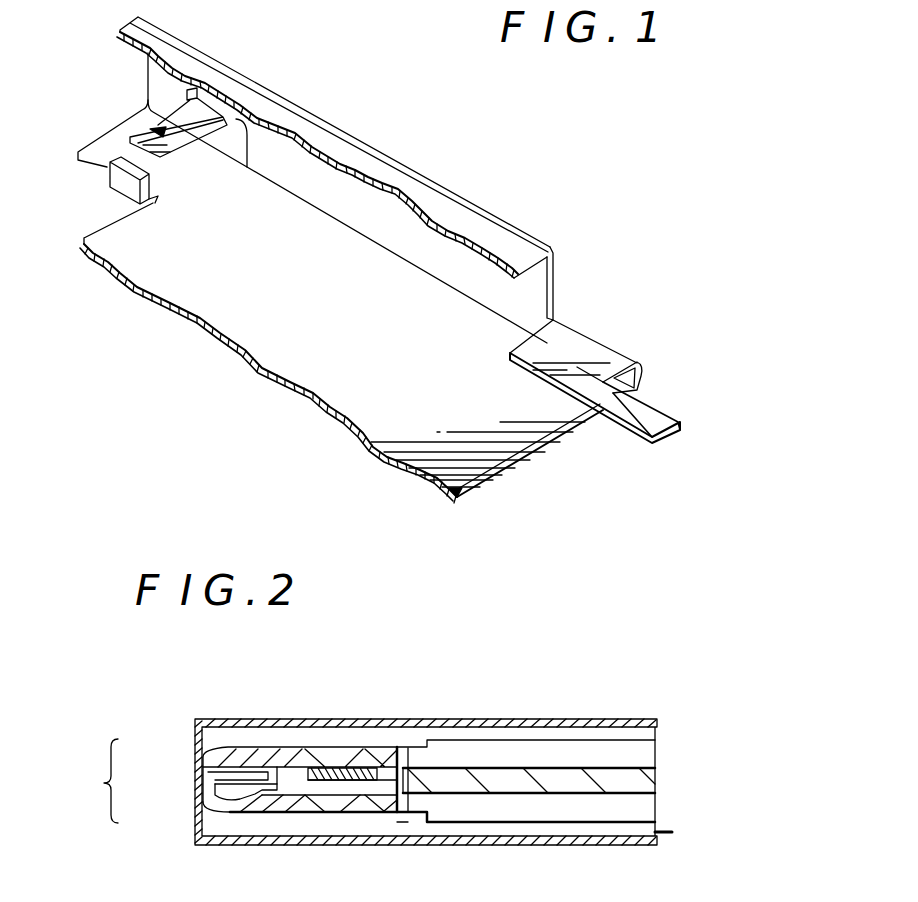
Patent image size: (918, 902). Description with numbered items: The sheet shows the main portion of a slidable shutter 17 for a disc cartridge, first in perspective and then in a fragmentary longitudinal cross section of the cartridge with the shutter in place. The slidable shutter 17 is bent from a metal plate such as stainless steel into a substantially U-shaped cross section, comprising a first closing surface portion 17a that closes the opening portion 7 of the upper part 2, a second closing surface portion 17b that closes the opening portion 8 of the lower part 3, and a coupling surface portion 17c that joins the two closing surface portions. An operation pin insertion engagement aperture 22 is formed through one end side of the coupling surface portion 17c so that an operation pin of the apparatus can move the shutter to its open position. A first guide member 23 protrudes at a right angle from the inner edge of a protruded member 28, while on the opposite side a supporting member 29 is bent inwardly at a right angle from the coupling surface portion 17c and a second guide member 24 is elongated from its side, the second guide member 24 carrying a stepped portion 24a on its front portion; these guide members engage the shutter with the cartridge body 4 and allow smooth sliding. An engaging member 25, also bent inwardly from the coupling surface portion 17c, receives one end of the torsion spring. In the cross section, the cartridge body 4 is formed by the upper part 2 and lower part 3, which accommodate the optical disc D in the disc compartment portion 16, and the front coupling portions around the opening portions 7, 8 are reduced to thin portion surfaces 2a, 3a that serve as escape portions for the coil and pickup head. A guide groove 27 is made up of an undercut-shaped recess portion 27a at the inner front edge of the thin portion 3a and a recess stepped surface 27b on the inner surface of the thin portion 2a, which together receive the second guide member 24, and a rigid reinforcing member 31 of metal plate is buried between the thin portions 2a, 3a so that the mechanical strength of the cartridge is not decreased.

In FIG. 2, the upper part 2 is at (420, 741).
In FIG. 2, the thin portion surface 2a is at (283, 763).
In FIG. 2, the lower part 3 is at (415, 823).
In FIG. 2, the thin portion surface 3a is at (260, 808).
In FIG. 2, the cartridge body 4 is at (667, 833).
In FIG. 2, the opening portion 7 is at (393, 750).
In FIG. 2, the opening portion 8 is at (395, 830).
In FIG. 2, the disc compartment portion 16 is at (604, 763).
In FIG. 1, the slidable shutter 17 is at (533, 450).
In FIG. 2, the slidable shutter 17 is at (488, 719).
In FIG. 1, the first closing surface portion 17a is at (374, 163).
In FIG. 2, the first closing surface portion 17a is at (560, 720).
In FIG. 1, the second closing surface portion 17b is at (282, 358).
In FIG. 2, the second closing surface portion 17b is at (492, 846).
In FIG. 1, the coupling surface portion 17c is at (557, 287).
In FIG. 2, the coupling surface portion 17c is at (192, 828).
In FIG. 1, the operation pin insertion engagement aperture 22 is at (245, 118).
In FIG. 1, the first guide member 23 is at (120, 183).
In FIG. 1, the second guide member 24 is at (680, 428).
In FIG. 2, the second guide member 24 is at (223, 750).
In FIG. 1, the stepped portion 24a is at (660, 410).
In FIG. 1, the engaging member 25 is at (183, 128).
In FIG. 2, the guide groove 27 is at (95, 781).
In FIG. 2, the undercut-shaped recess portion 27a is at (212, 797).
In FIG. 2, the recess stepped surface 27b is at (203, 773).
In FIG. 1, the protruded member 28 is at (98, 135).
In FIG. 1, the supporting member 29 is at (597, 357).
In FIG. 2, the supporting member 29 is at (258, 770).
In FIG. 2, the reinforcing member 31 is at (330, 770).
In FIG. 2, the optical disc D is at (560, 783).